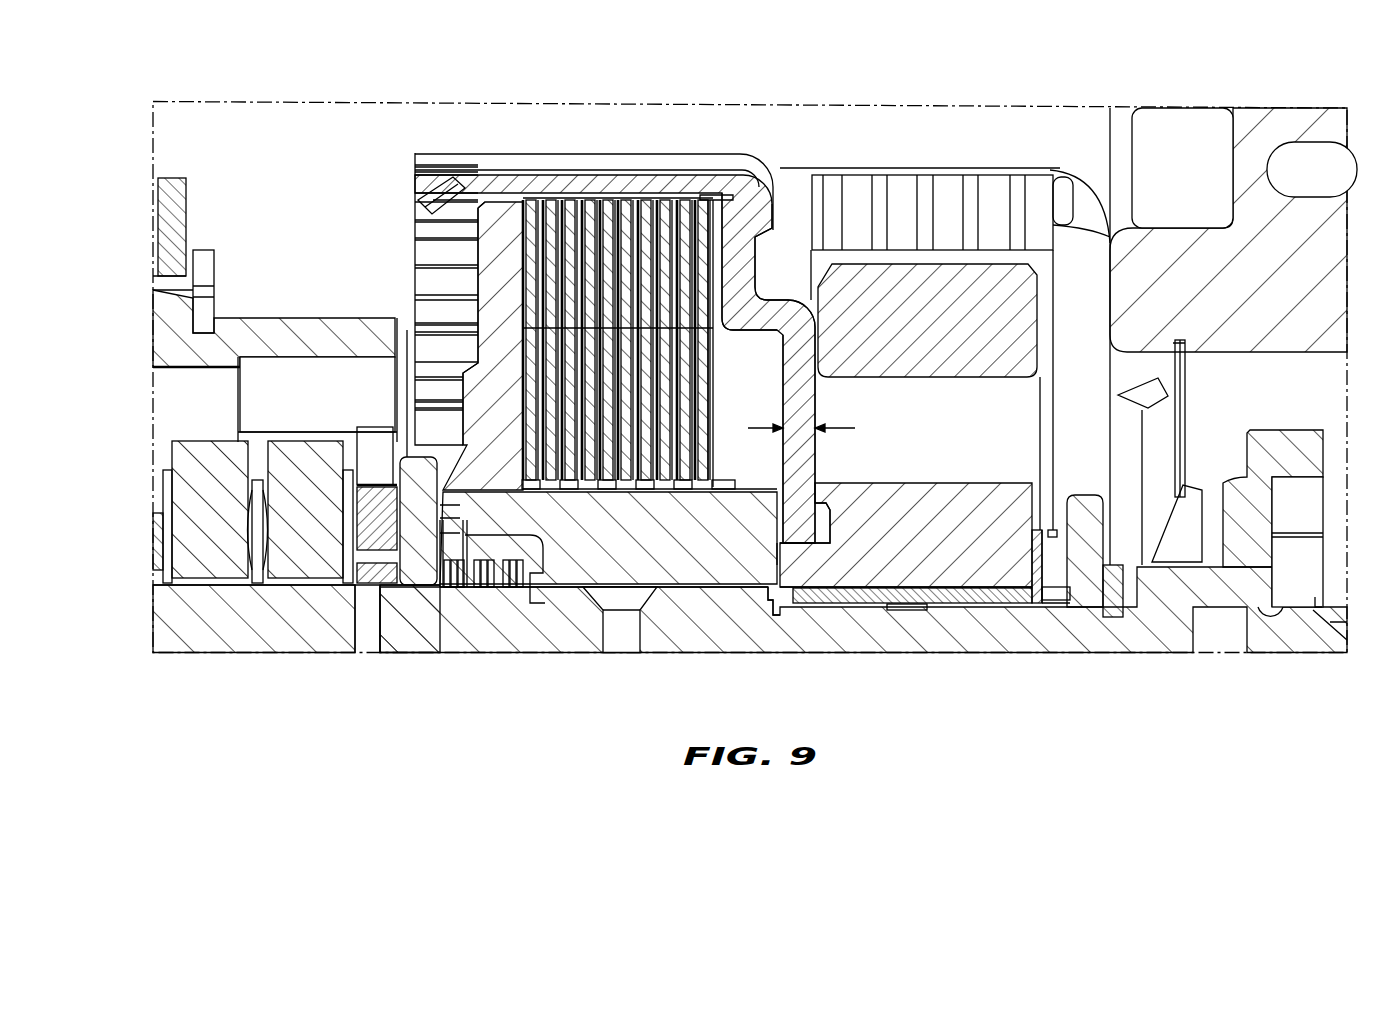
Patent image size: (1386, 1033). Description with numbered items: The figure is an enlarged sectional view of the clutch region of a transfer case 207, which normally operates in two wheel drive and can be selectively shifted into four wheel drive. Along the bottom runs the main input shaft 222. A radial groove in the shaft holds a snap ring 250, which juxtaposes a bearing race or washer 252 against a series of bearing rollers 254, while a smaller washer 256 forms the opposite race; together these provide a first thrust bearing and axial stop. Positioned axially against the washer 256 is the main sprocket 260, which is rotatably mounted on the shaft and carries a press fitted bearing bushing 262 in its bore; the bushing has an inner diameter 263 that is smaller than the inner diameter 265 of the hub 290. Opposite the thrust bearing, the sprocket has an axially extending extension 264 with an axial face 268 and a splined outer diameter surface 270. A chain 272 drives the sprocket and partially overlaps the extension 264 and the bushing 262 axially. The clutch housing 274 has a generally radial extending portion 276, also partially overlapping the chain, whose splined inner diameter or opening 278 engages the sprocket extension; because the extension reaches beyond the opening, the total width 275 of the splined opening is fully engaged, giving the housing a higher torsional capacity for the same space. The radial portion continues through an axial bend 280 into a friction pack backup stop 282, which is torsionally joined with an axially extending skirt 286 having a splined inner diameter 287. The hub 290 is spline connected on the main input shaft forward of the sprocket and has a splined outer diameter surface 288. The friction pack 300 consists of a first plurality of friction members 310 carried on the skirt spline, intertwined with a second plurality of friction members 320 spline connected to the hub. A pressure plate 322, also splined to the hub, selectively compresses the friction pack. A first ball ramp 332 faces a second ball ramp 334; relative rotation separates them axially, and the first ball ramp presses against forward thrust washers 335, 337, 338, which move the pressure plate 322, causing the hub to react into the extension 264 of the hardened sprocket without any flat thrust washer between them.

The transfer case 207 is at (698, 78).
The main input shaft 222 is at (1095, 628).
The snap ring 250 is at (1113, 568).
The bearing race or washer 252 is at (1073, 495).
The bearing rollers 254 is at (1053, 582).
The smaller washer 256 is at (1037, 575).
The main sprocket 260 is at (1035, 285).
The bearing bushing 262 is at (947, 598).
The bushing inner diameter 263 is at (852, 601).
The axially extending extension 264 is at (797, 572).
The hub inner diameter 265 is at (677, 582).
The axial face 268 is at (777, 565).
The outer diameter surface 270 is at (805, 545).
The chain 272 is at (865, 172).
The clutch housing 274 is at (560, 154).
The total width of clutch housing splined opening 275 is at (824, 428).
The radial extending portion 276 is at (816, 410).
The splined inner diameter or opening 278 is at (812, 548).
The axial bend 280 is at (764, 297).
The friction pack backup stop 282 is at (757, 238).
The axially extending skirt 286 is at (614, 154).
The splined inner diameter 287 is at (497, 200).
The splined outer diameter surface 288 is at (740, 492).
The hub 290 is at (600, 560).
The friction pack 300 is at (728, 362).
The first plurality of friction members 310 is at (716, 216).
The second plurality of friction members 320 is at (712, 388).
The pressure plate 322 is at (478, 232).
The first ball ramp 332 is at (297, 440).
The second ball ramp 334 is at (222, 445).
The forward thrust bearing or washer 335 is at (356, 494).
The forward thrust bearing or washer 337 is at (381, 486).
The forward thrust bearing or washer 338 is at (409, 588).